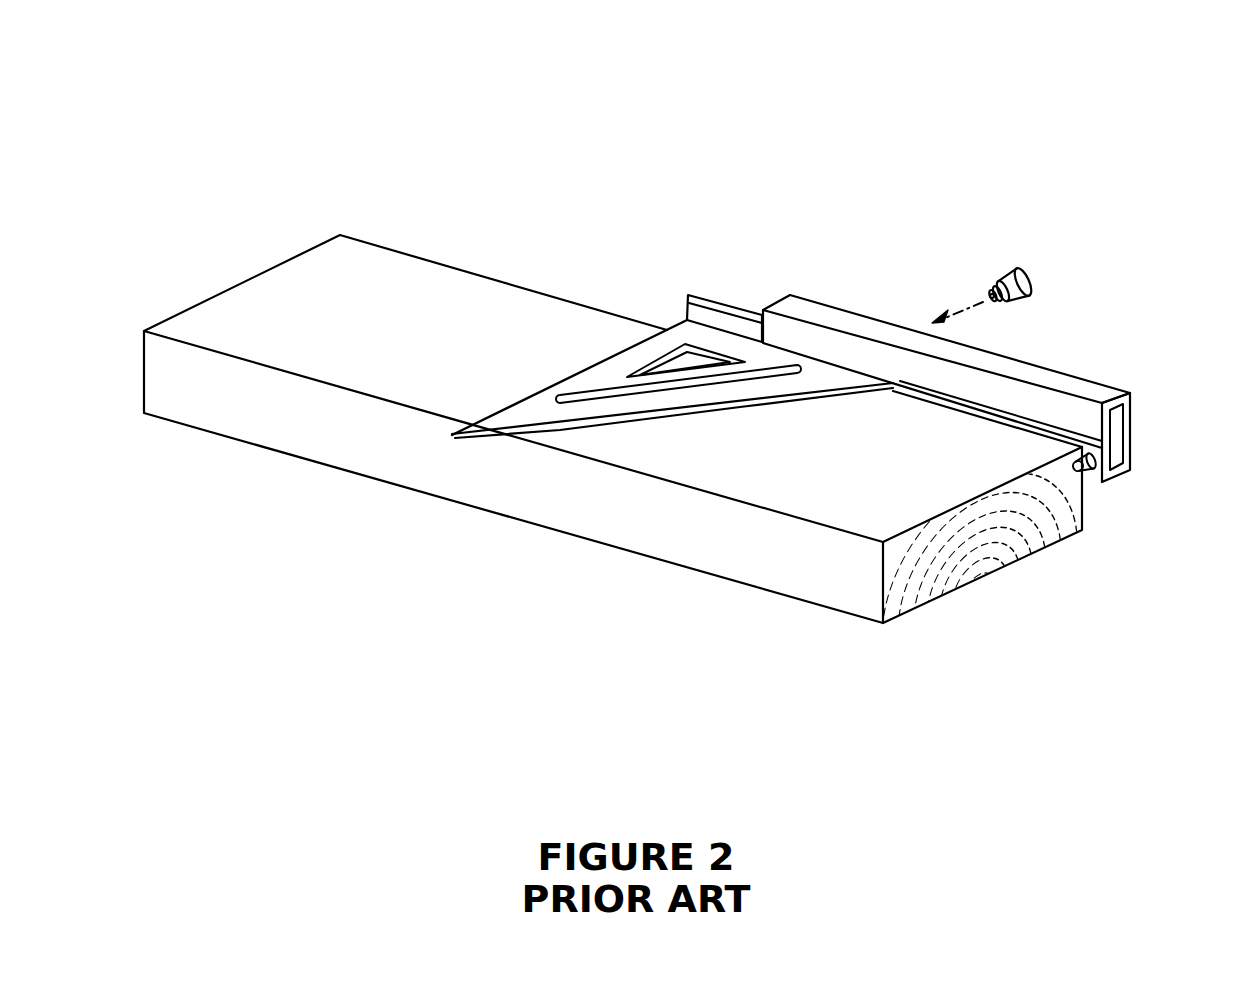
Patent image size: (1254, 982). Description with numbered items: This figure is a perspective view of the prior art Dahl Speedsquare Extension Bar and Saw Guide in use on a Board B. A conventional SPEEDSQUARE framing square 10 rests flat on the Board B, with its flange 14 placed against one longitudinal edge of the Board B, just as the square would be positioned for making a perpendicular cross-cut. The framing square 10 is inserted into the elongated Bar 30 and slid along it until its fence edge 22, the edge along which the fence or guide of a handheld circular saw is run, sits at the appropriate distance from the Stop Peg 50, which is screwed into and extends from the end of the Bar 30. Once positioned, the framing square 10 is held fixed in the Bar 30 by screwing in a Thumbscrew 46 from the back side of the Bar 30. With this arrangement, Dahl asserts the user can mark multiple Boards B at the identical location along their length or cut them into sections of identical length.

The framing square 10 is at (625, 360).
The flange 14 is at (728, 303).
The fence edge 22 is at (658, 247).
The bar 30 is at (1032, 373).
The thumbscrew 46 is at (1030, 272).
The stop peg 50 is at (1122, 478).
The board B is at (823, 577).